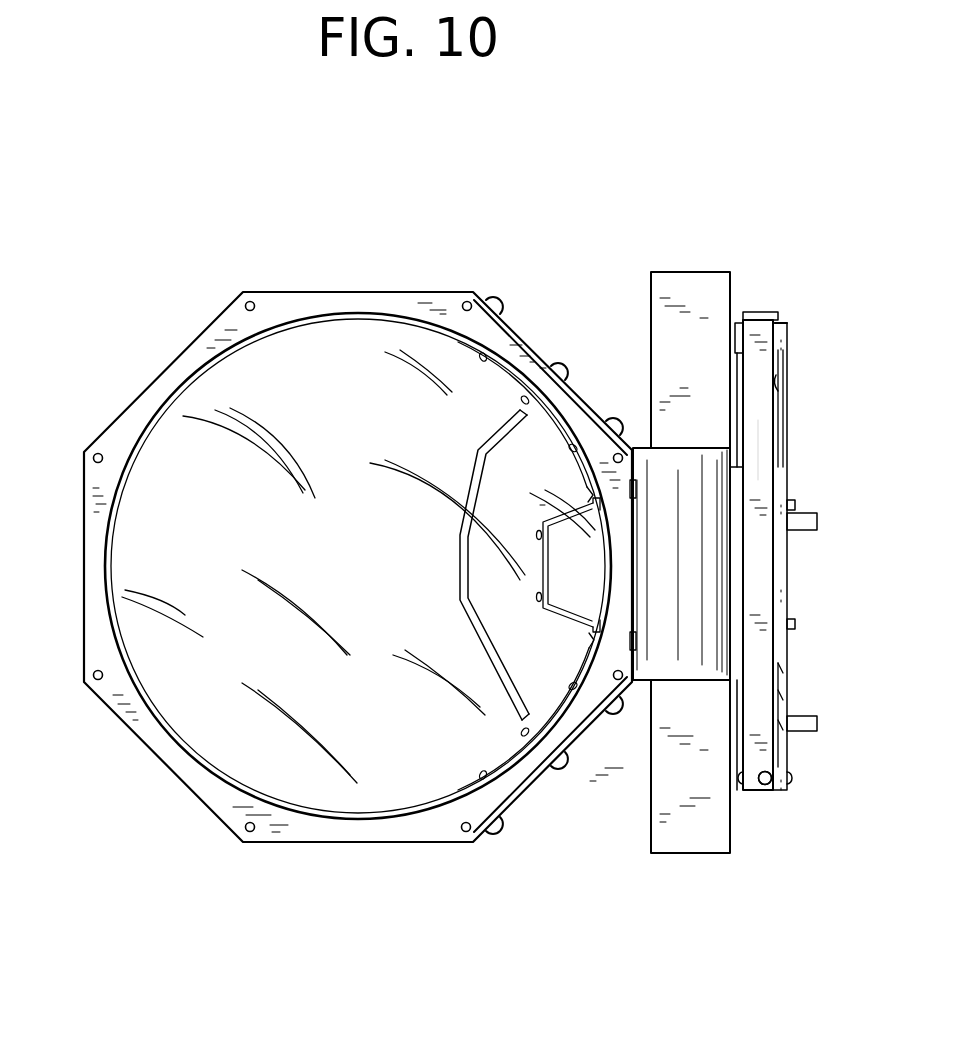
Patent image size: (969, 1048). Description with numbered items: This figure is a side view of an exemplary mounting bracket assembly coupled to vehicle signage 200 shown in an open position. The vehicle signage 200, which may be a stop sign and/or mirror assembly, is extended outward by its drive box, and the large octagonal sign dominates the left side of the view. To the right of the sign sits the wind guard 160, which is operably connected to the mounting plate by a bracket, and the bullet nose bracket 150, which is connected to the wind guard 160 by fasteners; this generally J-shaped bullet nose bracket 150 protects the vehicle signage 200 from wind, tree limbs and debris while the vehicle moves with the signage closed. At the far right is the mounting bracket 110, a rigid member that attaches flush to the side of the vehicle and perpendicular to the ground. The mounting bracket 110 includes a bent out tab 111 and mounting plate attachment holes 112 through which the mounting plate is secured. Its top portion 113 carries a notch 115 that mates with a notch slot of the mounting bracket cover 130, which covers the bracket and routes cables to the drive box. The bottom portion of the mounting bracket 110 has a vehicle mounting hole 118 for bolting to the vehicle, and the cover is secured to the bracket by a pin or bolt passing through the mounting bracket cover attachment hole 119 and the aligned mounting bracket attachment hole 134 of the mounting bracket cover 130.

The vehicle signage 200 is at (145, 568).
The wind guard 160 is at (692, 280).
The bullet nose bracket 150 is at (683, 660).
The notch 115 is at (737, 322).
The top portion 113 is at (781, 322).
The bent out tab 111 is at (778, 380).
The mounting bracket 110 is at (785, 428).
The mounting bracket cover 130 is at (755, 455).
The mounting plate attachment hole 112 is at (795, 505).
The vehicle mounting hole 118 is at (790, 778).
The mounting bracket cover attachment hole 119 is at (765, 790).
The mounting bracket attachment hole 134 is at (765, 778).